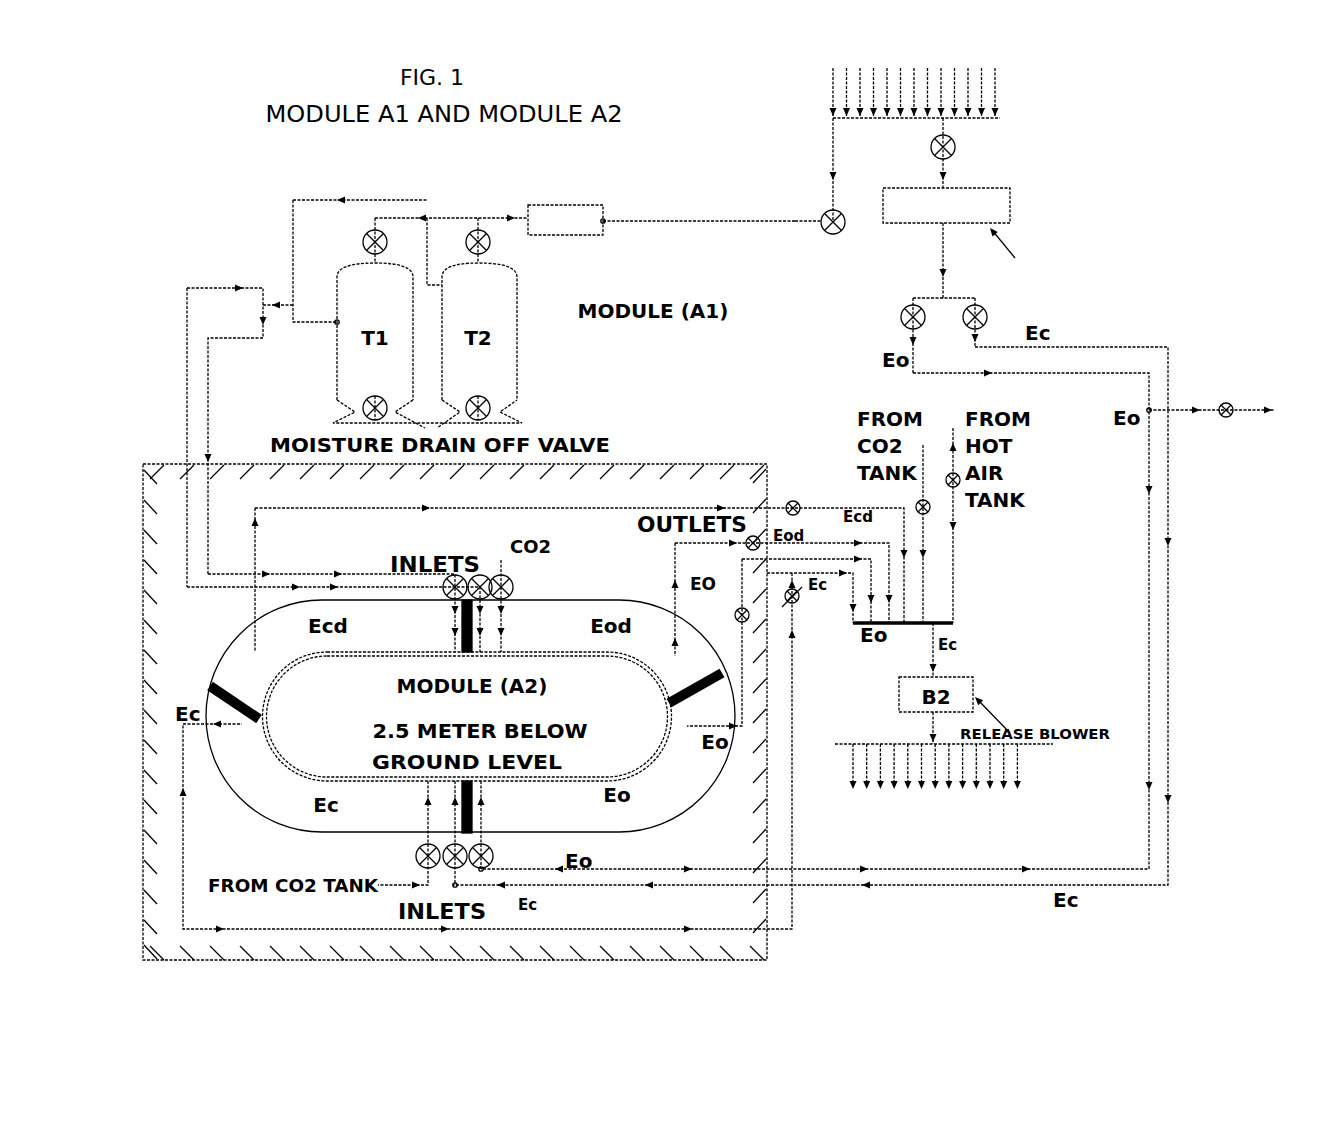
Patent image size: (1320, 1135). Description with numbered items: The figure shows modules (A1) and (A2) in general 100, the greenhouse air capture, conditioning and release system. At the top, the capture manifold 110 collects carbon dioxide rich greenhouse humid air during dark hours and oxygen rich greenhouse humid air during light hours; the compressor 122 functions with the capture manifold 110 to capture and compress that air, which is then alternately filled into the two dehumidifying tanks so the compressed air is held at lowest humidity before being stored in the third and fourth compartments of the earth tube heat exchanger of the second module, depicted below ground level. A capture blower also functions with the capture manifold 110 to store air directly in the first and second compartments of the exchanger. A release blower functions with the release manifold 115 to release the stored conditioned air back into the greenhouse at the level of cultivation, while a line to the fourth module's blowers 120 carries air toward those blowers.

The modules (A1) and (A2) in general 100 is at (1110, 228).
The capture manifold 110 is at (940, 78).
The release manifold 115 is at (992, 823).
The line to (A4) blowers 120 is at (1248, 422).
The compressor 122 is at (572, 242).